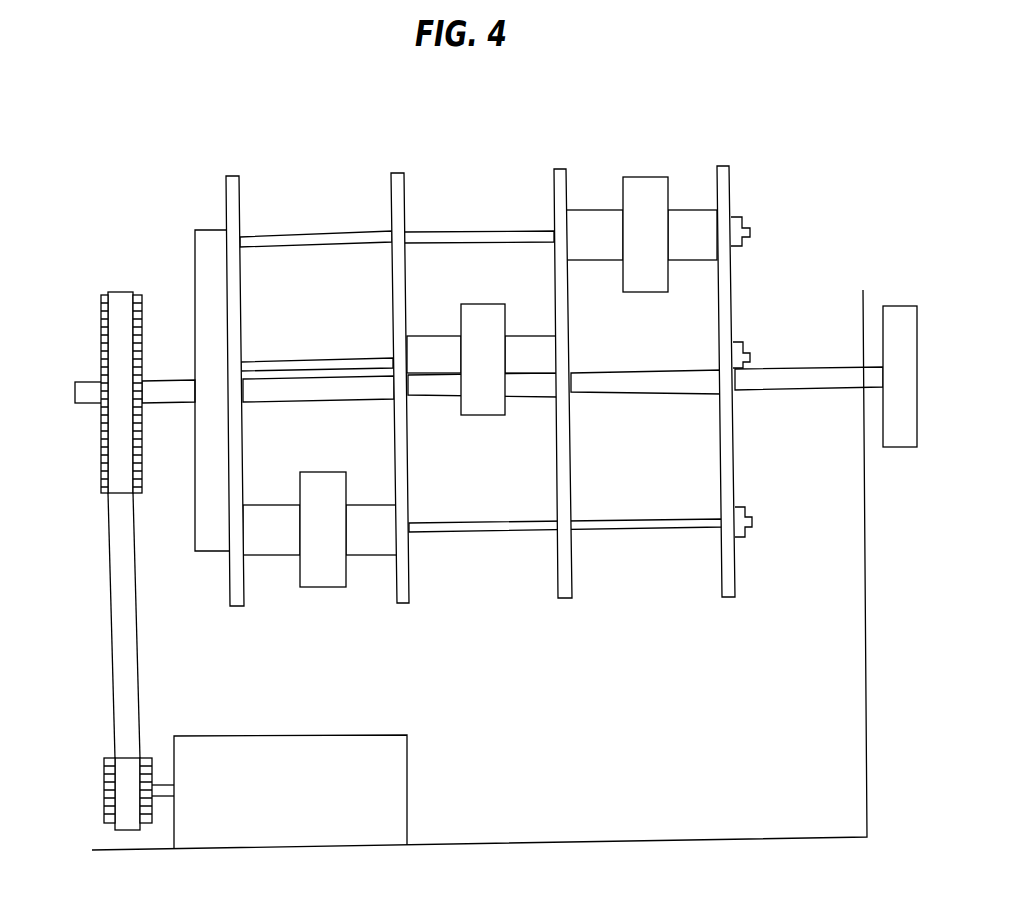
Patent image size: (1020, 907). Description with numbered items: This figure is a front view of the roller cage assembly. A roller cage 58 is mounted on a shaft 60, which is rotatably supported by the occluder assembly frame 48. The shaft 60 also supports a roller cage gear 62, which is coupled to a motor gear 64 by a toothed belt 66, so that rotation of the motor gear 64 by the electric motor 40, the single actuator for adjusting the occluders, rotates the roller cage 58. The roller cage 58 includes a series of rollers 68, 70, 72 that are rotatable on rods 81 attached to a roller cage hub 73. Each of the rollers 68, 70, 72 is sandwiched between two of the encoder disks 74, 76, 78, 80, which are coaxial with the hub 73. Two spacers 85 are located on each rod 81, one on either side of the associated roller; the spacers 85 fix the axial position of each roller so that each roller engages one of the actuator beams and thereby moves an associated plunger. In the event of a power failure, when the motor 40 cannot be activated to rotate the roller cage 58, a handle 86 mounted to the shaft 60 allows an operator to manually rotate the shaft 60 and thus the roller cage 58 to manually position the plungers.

The electric motor 40 is at (272, 734).
The occluder assembly frame 48 is at (867, 548).
The roller cage 58 is at (818, 198).
The shaft 60 is at (793, 369).
The roller cage gear 62 is at (100, 323).
The motor gear 64 is at (103, 797).
The toothed belt 66 is at (110, 606).
The roller 68 is at (321, 587).
The roller 70 is at (480, 304).
The roller 72 is at (645, 177).
The roller cage hub 73 is at (202, 230).
The encoder disk 74 is at (233, 176).
The encoder disk 76 is at (396, 172).
The encoder disk 78 is at (559, 169).
The encoder disk 80 is at (722, 166).
The rod 81 is at (289, 237).
The spacer 85 is at (598, 210).
The handle 86 is at (900, 306).